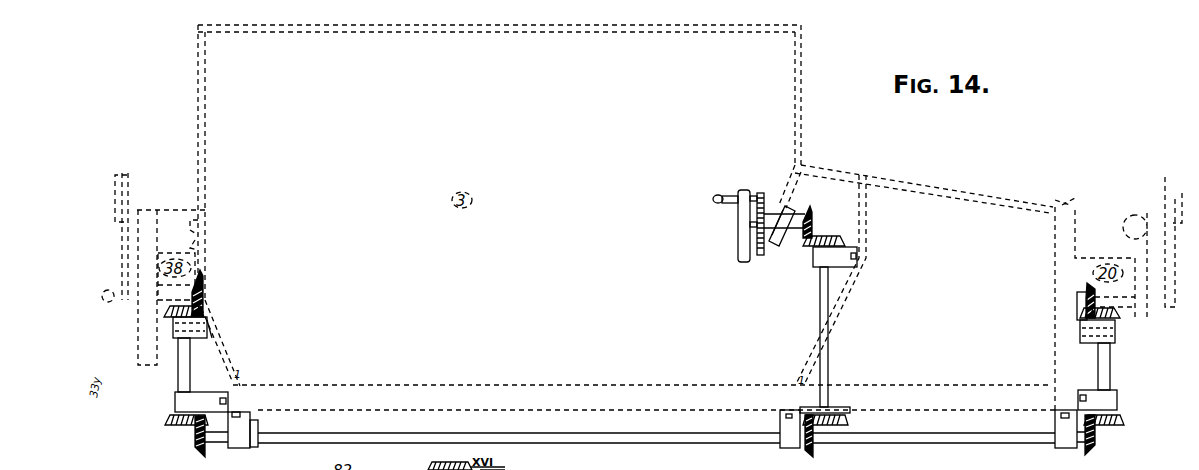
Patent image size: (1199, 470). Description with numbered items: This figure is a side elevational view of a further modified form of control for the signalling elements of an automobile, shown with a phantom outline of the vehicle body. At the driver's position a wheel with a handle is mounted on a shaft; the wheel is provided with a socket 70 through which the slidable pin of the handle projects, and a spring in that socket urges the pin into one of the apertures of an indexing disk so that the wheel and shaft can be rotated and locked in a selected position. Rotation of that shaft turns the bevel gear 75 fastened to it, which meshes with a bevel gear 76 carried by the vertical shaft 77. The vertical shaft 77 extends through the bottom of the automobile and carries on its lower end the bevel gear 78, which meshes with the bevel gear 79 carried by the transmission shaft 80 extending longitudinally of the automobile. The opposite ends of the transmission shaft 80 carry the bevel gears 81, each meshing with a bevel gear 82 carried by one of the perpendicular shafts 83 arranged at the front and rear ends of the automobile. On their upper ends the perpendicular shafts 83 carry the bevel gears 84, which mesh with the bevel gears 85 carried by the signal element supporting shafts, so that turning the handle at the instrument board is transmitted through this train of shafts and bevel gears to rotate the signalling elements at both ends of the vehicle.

The socket 70 is at (432, 466).
The bevel gear 75 is at (810, 212).
The bevel gear 76 is at (828, 240).
The vertical shaft 77 is at (820, 313).
The bevel gear 78 is at (846, 421).
The bevel gear 79 is at (805, 442).
The transmission shaft 80 is at (716, 434).
The bevel gear 81 is at (195, 446).
The bevel gear 82 is at (174, 421).
The perpendicular shaft 83 is at (185, 376).
The bevel gear 84 is at (205, 311).
The bevel gear 85 is at (201, 296).